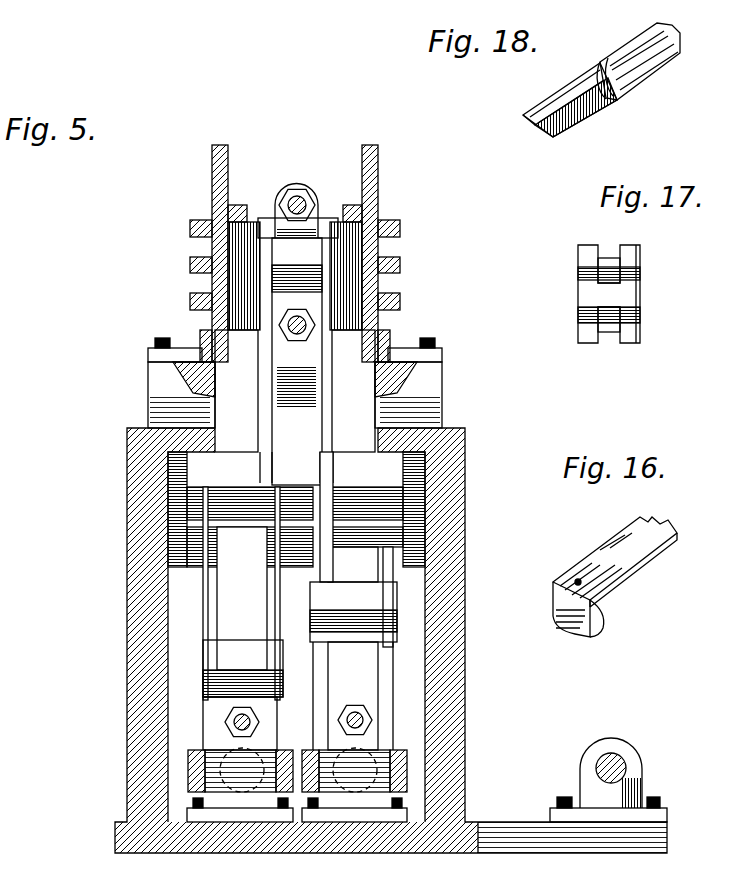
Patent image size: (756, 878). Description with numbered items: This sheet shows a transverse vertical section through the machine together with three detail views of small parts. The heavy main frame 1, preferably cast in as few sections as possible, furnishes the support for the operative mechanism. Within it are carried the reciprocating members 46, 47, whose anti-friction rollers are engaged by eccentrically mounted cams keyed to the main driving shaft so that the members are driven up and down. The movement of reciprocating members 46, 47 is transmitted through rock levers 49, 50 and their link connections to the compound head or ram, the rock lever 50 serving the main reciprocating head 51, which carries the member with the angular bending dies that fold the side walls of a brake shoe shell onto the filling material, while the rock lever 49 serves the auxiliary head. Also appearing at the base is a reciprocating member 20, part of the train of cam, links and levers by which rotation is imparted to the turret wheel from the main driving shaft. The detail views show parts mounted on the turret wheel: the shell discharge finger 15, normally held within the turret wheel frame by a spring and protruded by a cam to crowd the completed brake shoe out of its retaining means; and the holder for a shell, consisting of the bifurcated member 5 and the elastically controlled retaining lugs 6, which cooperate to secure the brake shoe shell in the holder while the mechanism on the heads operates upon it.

In FIG. 5, the main frame 1 is at (157, 455).
In FIG. 5, the main reciprocating head 51 is at (222, 210).
In FIG. 5, the rock lever 50 is at (213, 603).
In FIG. 5, the rock lever 49 is at (383, 553).
In FIG. 5, the reciprocating member 47 is at (195, 775).
In FIG. 5, the reciprocating member 46 is at (403, 750).
In FIG. 5, the reciprocating member 20 is at (620, 762).
In FIG. 18, the shell discharge finger 15 is at (640, 77).
In FIG. 17, the bifurcated member 5 is at (642, 288).
In FIG. 17, the elastically controlled retaining lug 6 is at (608, 258).
In FIG. 16, the elastically controlled retaining lug 6 is at (593, 620).